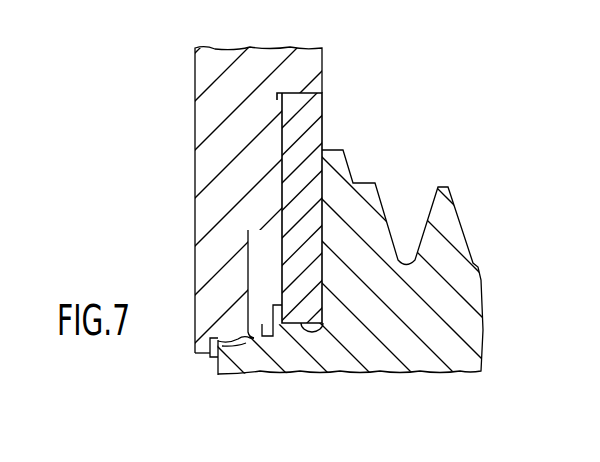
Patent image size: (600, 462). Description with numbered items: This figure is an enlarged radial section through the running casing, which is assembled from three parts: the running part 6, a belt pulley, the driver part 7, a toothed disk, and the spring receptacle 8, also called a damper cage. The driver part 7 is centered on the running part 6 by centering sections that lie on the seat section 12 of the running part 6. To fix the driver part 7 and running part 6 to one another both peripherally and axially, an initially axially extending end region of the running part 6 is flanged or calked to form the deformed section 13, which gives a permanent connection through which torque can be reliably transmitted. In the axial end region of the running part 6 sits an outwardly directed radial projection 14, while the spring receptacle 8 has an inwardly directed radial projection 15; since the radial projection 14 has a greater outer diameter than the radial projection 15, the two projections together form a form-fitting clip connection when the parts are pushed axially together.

The running part 6 is at (428, 358).
The driver part 7 is at (323, 122).
The spring receptacle 8 is at (213, 193).
The seat section 12 is at (323, 299).
The deformed section 13 is at (264, 368).
The radial projection 14 is at (219, 378).
The radial projection 15 is at (241, 375).